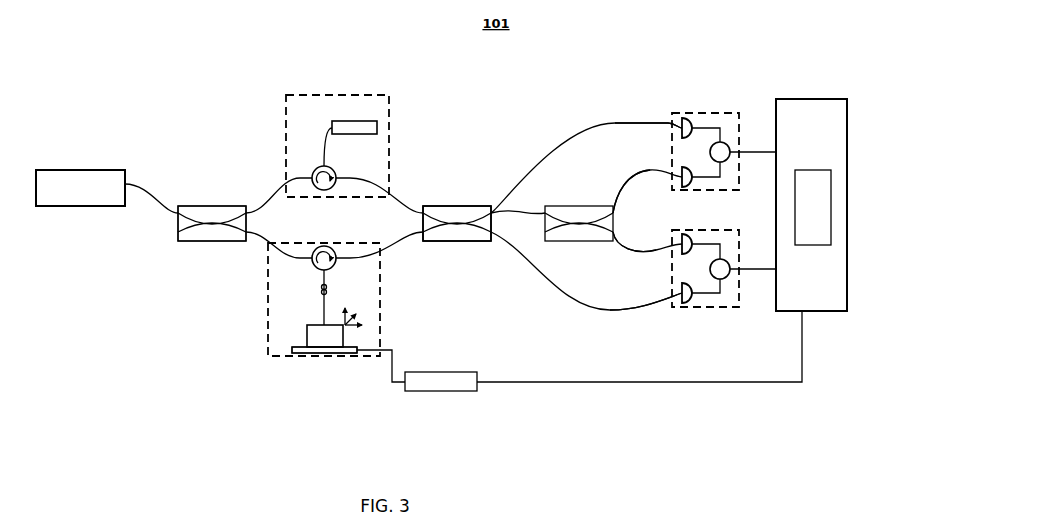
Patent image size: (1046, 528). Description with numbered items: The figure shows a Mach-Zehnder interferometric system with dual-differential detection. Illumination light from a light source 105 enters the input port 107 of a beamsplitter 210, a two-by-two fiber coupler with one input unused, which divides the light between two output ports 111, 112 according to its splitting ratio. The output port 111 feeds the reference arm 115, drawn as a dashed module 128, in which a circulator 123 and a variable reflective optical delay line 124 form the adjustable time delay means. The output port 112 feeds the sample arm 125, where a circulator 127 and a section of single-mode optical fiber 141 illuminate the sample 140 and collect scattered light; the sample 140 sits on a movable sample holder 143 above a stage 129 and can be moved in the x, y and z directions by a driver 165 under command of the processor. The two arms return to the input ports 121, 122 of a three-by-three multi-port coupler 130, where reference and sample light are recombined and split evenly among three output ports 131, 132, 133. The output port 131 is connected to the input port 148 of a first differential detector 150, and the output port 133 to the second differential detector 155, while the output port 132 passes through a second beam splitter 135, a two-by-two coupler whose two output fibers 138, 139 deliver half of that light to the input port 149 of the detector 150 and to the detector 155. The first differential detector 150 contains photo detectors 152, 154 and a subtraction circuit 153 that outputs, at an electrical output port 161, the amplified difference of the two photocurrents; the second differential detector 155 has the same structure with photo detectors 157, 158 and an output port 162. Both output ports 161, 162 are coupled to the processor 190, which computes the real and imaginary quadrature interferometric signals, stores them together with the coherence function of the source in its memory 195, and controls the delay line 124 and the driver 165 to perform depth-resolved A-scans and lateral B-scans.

The light source 105 is at (88, 170).
The input port 107 is at (178, 208).
The beamsplitter 210 is at (213, 206).
The output port 111 is at (272, 184).
The output port 112 is at (254, 248).
The reference arm 115 is at (374, 139).
The reference arm module 128 is at (298, 95).
The variable reflective optical delay line 124 is at (345, 121).
The circulator 123 is at (332, 189).
The sample arm 125 is at (341, 308).
The circulator 127 is at (319, 246).
The single-mode optical fiber 141 is at (324, 306).
The sample 140 is at (307, 337).
The movable sample holder 143 is at (341, 355).
The translation stage 129 is at (290, 357).
The input port 121 is at (426, 206).
The multi-port coupler 130 is at (453, 206).
The input port 122 is at (426, 242).
The output port 131 is at (512, 188).
The output port 132 is at (507, 215).
The output port 133 is at (500, 252).
The second beam splitter 135 is at (580, 206).
The coupler output fiber 138 is at (618, 210).
The coupler output fiber 139 is at (625, 243).
The input port 149 is at (660, 187).
The input port 148 is at (670, 124).
The first differential detector 150 is at (711, 143).
The photo detector 152 is at (688, 113).
The photo detector 154 is at (690, 189).
The electrical output port 161 is at (748, 152).
The subtraction circuit 153 is at (718, 259).
The photo detector 157 is at (689, 233).
The photo detector 158 is at (689, 304).
The second differential detector 155 is at (676, 307).
The output port 162 is at (745, 269).
The processor 190 is at (834, 180).
The memory 195 is at (831, 205).
The driver 165 is at (420, 392).